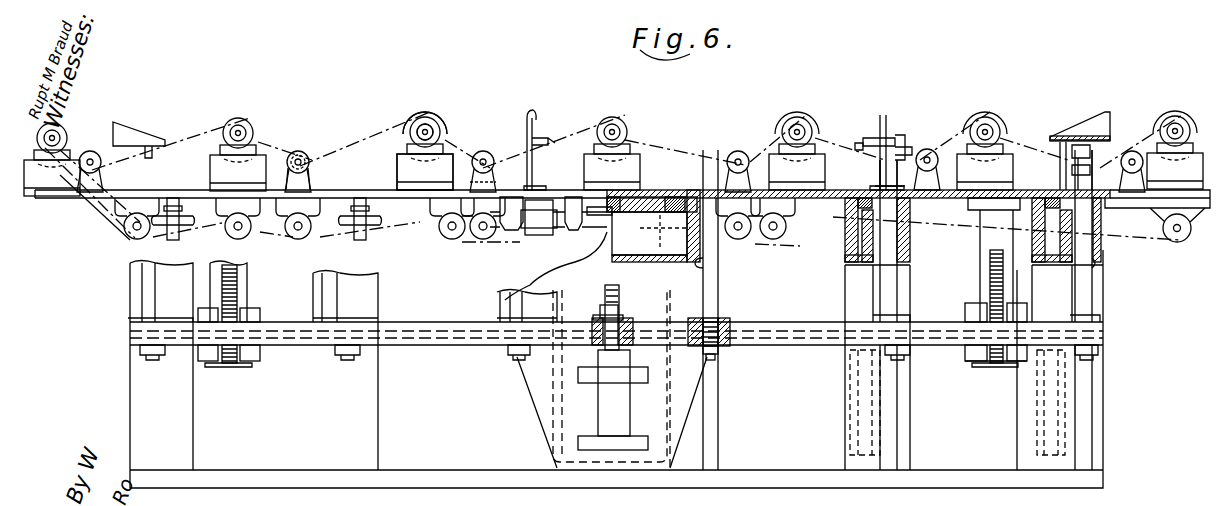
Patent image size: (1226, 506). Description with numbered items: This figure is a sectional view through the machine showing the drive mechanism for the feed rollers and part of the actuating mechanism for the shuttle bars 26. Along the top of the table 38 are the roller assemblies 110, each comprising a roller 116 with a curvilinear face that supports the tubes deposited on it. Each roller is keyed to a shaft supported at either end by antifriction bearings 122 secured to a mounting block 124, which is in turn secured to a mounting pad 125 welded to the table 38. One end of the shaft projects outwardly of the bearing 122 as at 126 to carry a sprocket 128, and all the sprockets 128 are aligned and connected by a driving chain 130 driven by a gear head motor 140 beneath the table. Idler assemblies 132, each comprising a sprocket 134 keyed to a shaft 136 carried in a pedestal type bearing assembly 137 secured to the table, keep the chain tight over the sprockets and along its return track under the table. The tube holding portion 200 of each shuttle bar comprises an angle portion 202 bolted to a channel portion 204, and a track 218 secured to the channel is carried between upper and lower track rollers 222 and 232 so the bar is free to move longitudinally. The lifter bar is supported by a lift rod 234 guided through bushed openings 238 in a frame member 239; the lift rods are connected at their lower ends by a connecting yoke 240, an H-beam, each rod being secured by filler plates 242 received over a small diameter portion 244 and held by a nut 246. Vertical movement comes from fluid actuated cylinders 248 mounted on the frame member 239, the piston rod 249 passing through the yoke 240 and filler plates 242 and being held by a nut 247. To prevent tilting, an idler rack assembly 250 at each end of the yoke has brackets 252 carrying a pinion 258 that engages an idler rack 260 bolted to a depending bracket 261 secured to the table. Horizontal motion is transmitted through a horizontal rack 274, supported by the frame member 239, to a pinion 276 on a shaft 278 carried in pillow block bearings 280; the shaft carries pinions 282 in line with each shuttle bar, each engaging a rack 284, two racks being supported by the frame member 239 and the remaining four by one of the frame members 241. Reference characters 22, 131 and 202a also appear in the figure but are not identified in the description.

The conveyor wheel 22 is at (638, 112).
The shuttle bars 26 is at (128, 117).
The table 38 is at (300, 242).
The roller assemblies 110 is at (455, 115).
The roller 116 is at (415, 118).
The antifriction bearings 122 is at (390, 148).
The mounting block 124 is at (425, 172).
The mounting pad 125 is at (425, 192).
The projecting end of shaft 126 is at (442, 118).
The sprocket 128 is at (428, 128).
The driving chain 130 is at (200, 135).
The roller support 131 is at (288, 175).
The idler assemblies 132 is at (108, 236).
The sprocket 134 is at (492, 150).
The shaft 136 is at (298, 150).
The pedestal type bearing assembly 137 is at (440, 212).
The gear head motor 140 is at (245, 242).
The tube holding portion of the shuttle bars 200 is at (886, 110).
The angle portion 202 is at (538, 140).
The plate 202a is at (1100, 112).
The channel portion 204 is at (527, 130).
The track 218 is at (862, 144).
The upper track rollers 222 is at (905, 135).
The lower track rollers 232 is at (880, 165).
The lift rod 234 is at (141, 300).
The bushed openings 238 is at (703, 268).
The frame member 239 is at (592, 300).
The connecting yoke 240 is at (775, 345).
The frame members 241 is at (130, 384).
The filler plates 242 is at (730, 320).
The small diameter portion 244 is at (718, 354).
The nut 246 is at (710, 360).
The nut 247 is at (620, 309).
The fluid actuated cylinders 248 is at (603, 410).
The piston rod 249 is at (598, 314).
The idler rack assembly 250 is at (975, 372).
The brackets 252 is at (200, 360).
The pinion 258 is at (230, 366).
The idler rack 260 is at (237, 293).
The depending bracket 261 is at (980, 249).
The horizontal rack 274 is at (615, 205).
The pinion 276 is at (585, 240).
The shaft 278 is at (573, 232).
The pillow block bearings 280 is at (505, 232).
The pinions 282 is at (173, 230).
The rack 284 is at (173, 208).